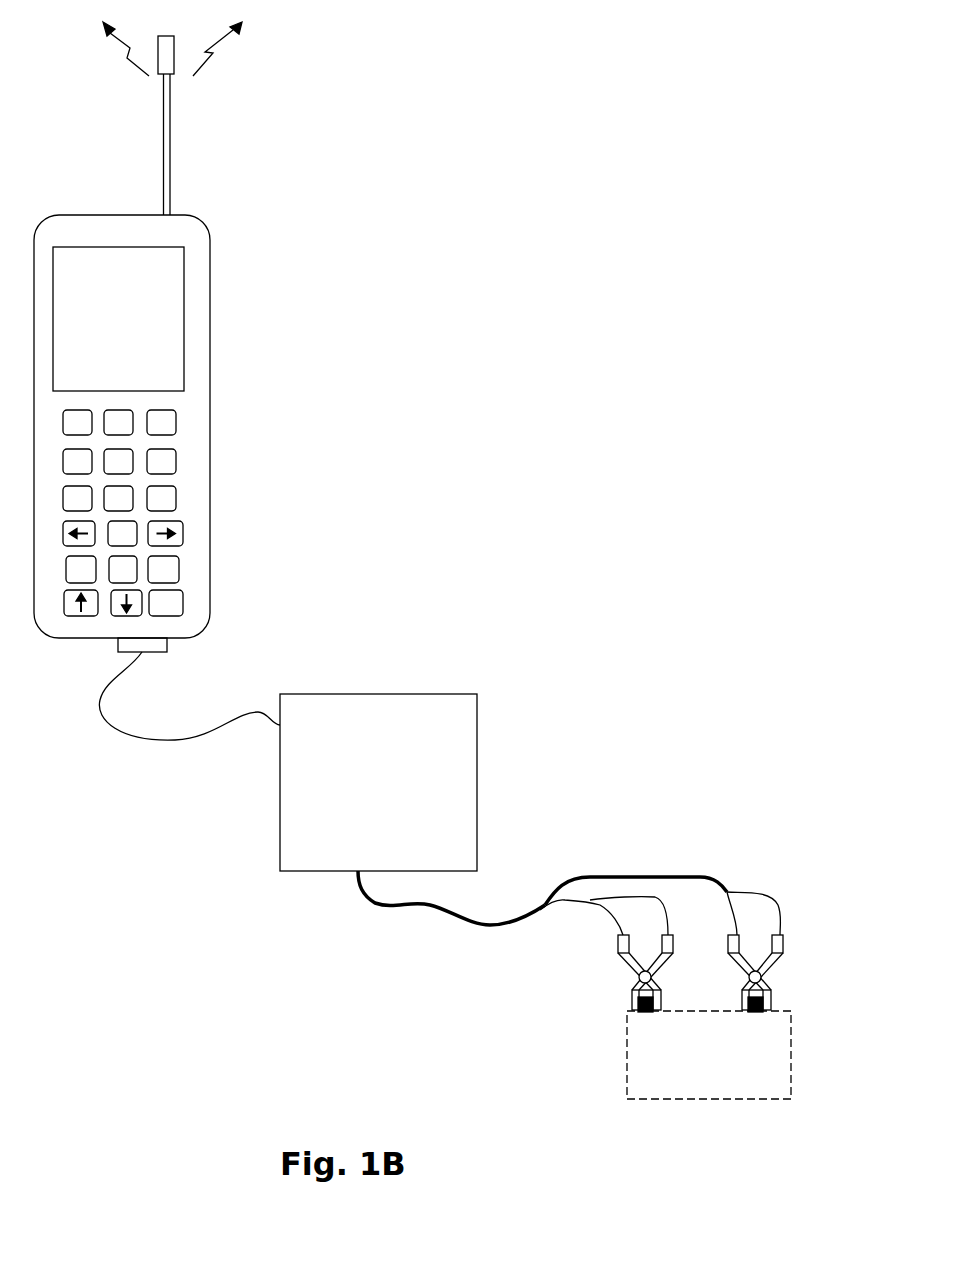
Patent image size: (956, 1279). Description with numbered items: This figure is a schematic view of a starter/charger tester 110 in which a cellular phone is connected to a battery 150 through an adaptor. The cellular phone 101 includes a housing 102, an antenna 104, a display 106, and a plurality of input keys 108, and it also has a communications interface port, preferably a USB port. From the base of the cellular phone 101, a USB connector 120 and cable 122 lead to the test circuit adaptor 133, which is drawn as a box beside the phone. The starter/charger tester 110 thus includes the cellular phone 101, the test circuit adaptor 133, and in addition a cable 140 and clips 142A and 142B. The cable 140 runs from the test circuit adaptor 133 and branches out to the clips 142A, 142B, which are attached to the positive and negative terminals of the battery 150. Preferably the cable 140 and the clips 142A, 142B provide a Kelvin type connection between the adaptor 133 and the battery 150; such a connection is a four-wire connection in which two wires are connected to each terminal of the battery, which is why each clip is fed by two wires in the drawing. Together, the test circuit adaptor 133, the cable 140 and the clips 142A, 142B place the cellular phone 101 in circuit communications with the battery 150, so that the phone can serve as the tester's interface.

The cellular phone 101 is at (234, 289).
The housing 102 is at (210, 400).
The antenna 104 is at (170, 142).
The display 106 is at (184, 347).
The plurality of input keys 108 is at (176, 461).
The starter/charger tester 110 is at (460, 542).
The USB connector 120 is at (167, 645).
The cable 122 is at (189, 720).
The test circuit adaptor 133 is at (477, 724).
The cable 140 is at (483, 927).
The clip 142A is at (617, 960).
The clip 142B is at (783, 957).
The battery 150 is at (672, 1055).